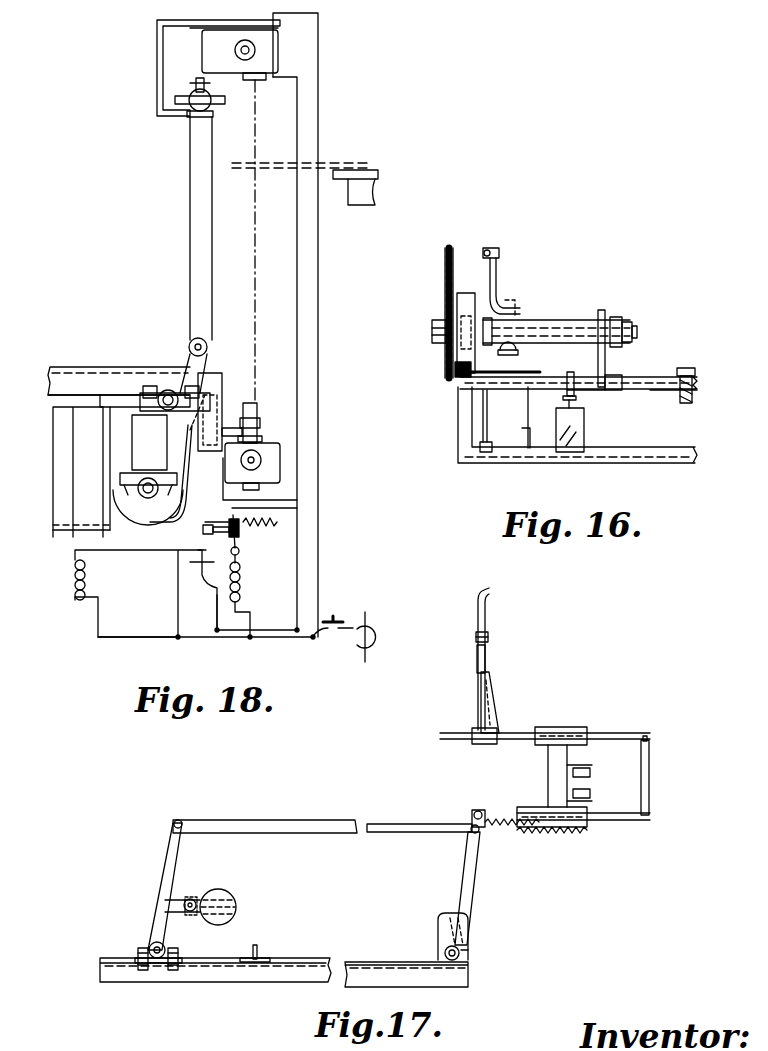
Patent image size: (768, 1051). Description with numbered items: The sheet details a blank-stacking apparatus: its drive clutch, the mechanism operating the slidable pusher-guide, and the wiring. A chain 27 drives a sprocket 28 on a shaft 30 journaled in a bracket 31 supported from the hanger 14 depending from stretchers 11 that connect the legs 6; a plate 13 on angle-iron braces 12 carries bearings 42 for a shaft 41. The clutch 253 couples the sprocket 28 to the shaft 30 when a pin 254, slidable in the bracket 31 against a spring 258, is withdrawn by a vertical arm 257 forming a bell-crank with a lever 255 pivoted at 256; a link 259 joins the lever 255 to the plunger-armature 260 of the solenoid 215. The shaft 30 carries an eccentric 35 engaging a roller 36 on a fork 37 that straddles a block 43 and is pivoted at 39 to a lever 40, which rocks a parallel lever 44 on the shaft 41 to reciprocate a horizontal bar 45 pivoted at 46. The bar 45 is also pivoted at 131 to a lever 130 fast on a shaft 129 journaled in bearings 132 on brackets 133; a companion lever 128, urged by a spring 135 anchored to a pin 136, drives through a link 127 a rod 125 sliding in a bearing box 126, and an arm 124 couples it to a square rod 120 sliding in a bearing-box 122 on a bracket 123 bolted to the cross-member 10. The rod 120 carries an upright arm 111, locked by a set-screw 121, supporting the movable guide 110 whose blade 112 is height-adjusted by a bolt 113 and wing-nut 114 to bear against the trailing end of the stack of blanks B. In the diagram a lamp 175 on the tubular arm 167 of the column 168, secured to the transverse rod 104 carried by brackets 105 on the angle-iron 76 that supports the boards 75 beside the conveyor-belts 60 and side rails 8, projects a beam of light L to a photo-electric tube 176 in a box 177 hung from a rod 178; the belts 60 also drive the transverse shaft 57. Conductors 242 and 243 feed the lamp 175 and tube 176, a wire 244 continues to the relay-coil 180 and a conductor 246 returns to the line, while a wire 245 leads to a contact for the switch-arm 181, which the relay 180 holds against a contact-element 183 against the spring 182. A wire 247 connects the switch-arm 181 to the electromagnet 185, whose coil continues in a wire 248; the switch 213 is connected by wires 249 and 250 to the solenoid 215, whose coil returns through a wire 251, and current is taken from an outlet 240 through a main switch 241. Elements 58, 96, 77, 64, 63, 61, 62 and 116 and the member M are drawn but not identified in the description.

In FIG. 18, the electric lamp 175 is at (275, 50).
In FIG. 18, the horizontal tubular arm 167 is at (190, 112).
In FIG. 18, the column 168 is at (190, 247).
In FIG. 18, the transverse rod 104 is at (208, 347).
In FIG. 18, the brackets 105 is at (185, 362).
In FIG. 18, the conveyor-belts 60 is at (92, 368).
In FIG. 18, the boards 75 is at (120, 372).
In FIG. 18, the plate 58 is at (142, 397).
In FIG. 18, the bracket 96 is at (222, 395).
In FIG. 18, the pipe 77 is at (237, 390).
In FIG. 18, the channel-iron or cross-member 10 is at (214, 405).
In FIG. 17, the channel-iron or cross-member 10 is at (586, 773).
In FIG. 18, the angle-iron 76 is at (68, 396).
In FIG. 18, the side rails 8 is at (65, 445).
In FIG. 18, the cylinder 64 is at (140, 450).
In FIG. 18, the transverse shaft 57 is at (165, 412).
In FIG. 18, the rod 178 is at (258, 432).
In FIG. 18, the photo-electric cell 176 is at (263, 458).
In FIG. 18, the box 177 is at (280, 470).
In FIG. 18, the bracket 63 is at (128, 495).
In FIG. 18, the legs 6 is at (80, 485).
In FIG. 17, the legs 6 is at (467, 955).
In FIG. 18, the support 61 is at (93, 468).
In FIG. 18, the wire 244 is at (215, 483).
In FIG. 18, the wire 245 is at (282, 503).
In FIG. 18, the pivot 62 is at (150, 500).
In FIG. 18, the relay-coil 180 is at (215, 530).
In FIG. 18, the contact-element 183 is at (282, 513).
In FIG. 18, the spring 182 is at (242, 530).
In FIG. 18, the switch-arm 181 is at (240, 535).
In FIG. 18, the wire 250 is at (165, 552).
In FIG. 18, the solenoid 215 is at (75, 580).
In FIG. 16, the solenoid 215 is at (582, 436).
In FIG. 18, the switch 213 is at (207, 572).
In FIG. 18, the wire 247 is at (240, 560).
In FIG. 18, the electromagnet 185 is at (242, 582).
In FIG. 18, the conductor 246 is at (178, 606).
In FIG. 18, the wire 249 is at (218, 595).
In FIG. 18, the wire 248 is at (252, 614).
In FIG. 18, the wire 251 is at (98, 628).
In FIG. 18, the main switch 241 is at (340, 618).
In FIG. 18, the outlet 240 is at (372, 633).
In FIG. 18, the conductor 243 is at (297, 320).
In FIG. 18, the conductor 242 is at (318, 335).
In FIG. 18, the blanks B is at (328, 165).
In FIG. 18, the member M is at (385, 190).
In FIG. 18, the beam of light L is at (257, 262).
In FIG. 16, the clutch 253 is at (466, 292).
In FIG. 16, the horizontal bar 45 is at (488, 248).
In FIG. 17, the horizontal bar 45 is at (290, 822).
In FIG. 16, the chain 27 is at (446, 270).
In FIG. 16, the lever 44 is at (497, 285).
In FIG. 17, the lever 44 is at (178, 855).
In FIG. 16, the spring 258 is at (512, 340).
In FIG. 16, the bracket 31 is at (530, 320).
In FIG. 16, the lever 255 is at (547, 328).
In FIG. 16, the eccentric 35 is at (607, 318).
In FIG. 17, the eccentric 35 is at (236, 903).
In FIG. 16, the fork 37 is at (624, 323).
In FIG. 17, the fork 37 is at (193, 899).
In FIG. 16, the shaft 30 is at (637, 335).
In FIG. 17, the shaft 30 is at (210, 905).
In FIG. 16, the angle-iron braces 12 is at (655, 377).
In FIG. 17, the angle-iron braces 12 is at (256, 955).
In FIG. 16, the vertical arm 257 is at (518, 350).
In FIG. 16, the sprocket 28 is at (437, 345).
In FIG. 16, the oscillatable lever 40 is at (622, 376).
In FIG. 17, the oscillatable lever 40 is at (162, 912).
In FIG. 16, the shaft 41 is at (672, 370).
In FIG. 17, the shaft 41 is at (155, 947).
In FIG. 16, the bearings 42 is at (694, 372).
In FIG. 17, the bearings 42 is at (175, 955).
In FIG. 16, the pin 254 is at (455, 377).
In FIG. 16, the link 259 is at (585, 391).
In FIG. 16, the plunger-armature 260 is at (576, 400).
In FIG. 16, the plate 13 is at (675, 395).
In FIG. 17, the plate 13 is at (205, 975).
In FIG. 16, the pivot 256 is at (488, 394).
In FIG. 16, the stretchers 11 is at (465, 390).
In FIG. 17, the stretchers 11 is at (300, 962).
In FIG. 16, the hanger 14 is at (460, 452).
In FIG. 17, the blade 112 is at (486, 615).
In FIG. 17, the wing-nut 114 is at (490, 637).
In FIG. 17, the bolt 113 is at (478, 645).
In FIG. 17, the movable guide 110 is at (487, 665).
In FIG. 17, the upright arm 111 is at (492, 720).
In FIG. 17, the set-screw 121 is at (480, 723).
In FIG. 17, the bearing-box 122 is at (552, 727).
In FIG. 17, the square rod 120 is at (600, 734).
In FIG. 17, the block 116 is at (482, 743).
In FIG. 17, the bracket 123 is at (548, 780).
In FIG. 17, the arm 124 is at (651, 790).
In FIG. 17, the pivoted link 127 is at (480, 810).
In FIG. 17, the second bearing box 126 is at (530, 812).
In FIG. 17, the rockable lever 128 is at (470, 818).
In FIG. 17, the lower parallel rod 125 is at (612, 818).
In FIG. 17, the pivot 131 is at (468, 833).
In FIG. 17, the spring 135 is at (538, 830).
In FIG. 17, the pin 136 is at (588, 835).
In FIG. 17, the lever 130 is at (468, 893).
In FIG. 17, the brackets 133 is at (438, 917).
In FIG. 17, the bearings 132 is at (442, 955).
In FIG. 17, the shaft 129 is at (460, 957).
In FIG. 17, the pivot 46 is at (180, 822).
In FIG. 17, the pivot 39 is at (172, 890).
In FIG. 17, the block 43 is at (234, 915).
In FIG. 17, the roller 36 is at (190, 915).